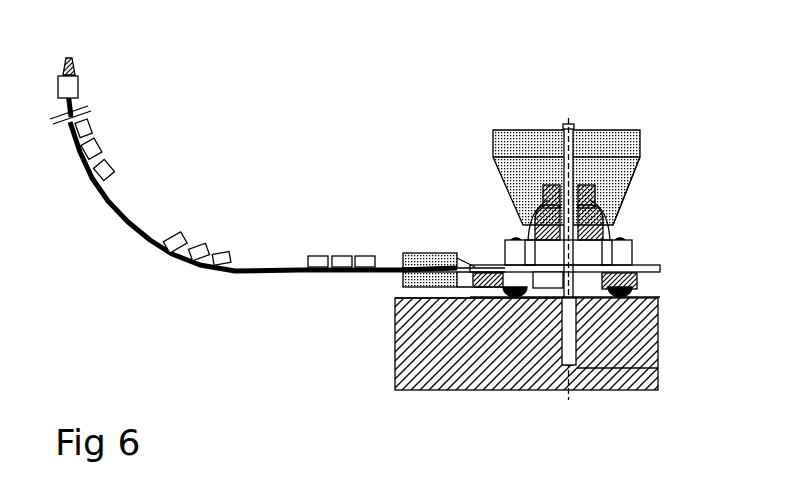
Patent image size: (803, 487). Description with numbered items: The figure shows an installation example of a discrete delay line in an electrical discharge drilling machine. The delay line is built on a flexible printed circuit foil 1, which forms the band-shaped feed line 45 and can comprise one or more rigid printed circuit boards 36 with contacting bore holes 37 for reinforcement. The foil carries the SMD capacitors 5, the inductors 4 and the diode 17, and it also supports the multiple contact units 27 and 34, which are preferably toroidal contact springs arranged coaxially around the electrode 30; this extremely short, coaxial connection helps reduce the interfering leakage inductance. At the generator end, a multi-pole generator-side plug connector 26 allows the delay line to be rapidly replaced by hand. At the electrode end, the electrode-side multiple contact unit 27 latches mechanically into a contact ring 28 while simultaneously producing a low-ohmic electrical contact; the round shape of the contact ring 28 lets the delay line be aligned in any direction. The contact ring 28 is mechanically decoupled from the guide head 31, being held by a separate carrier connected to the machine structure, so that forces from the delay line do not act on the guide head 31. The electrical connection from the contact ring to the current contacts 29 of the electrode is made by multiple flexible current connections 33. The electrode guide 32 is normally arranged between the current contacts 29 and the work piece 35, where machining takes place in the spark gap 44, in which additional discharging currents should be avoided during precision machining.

The flexible printed circuit foil 1 is at (302, 273).
The inductors 4 is at (120, 220).
The SMD capacitors 5 is at (111, 160).
The diode 17 is at (408, 252).
The multi-pole generator-side plug connector 26 is at (76, 73).
The electrode-side multiple contact unit 27 is at (504, 238).
The contact ring 28 is at (517, 240).
The current contacts 29 is at (546, 188).
The electrode 30 is at (566, 124).
The guide head 31 is at (597, 147).
The electrode guide 32 is at (645, 140).
The flexible current connections 33 is at (612, 216).
The multiple contact unit 34 is at (637, 290).
The work piece 35 is at (657, 320).
The rigid printed circuit boards 36 is at (402, 282).
The contacting bore holes 37 is at (393, 318).
The spark gap 44 is at (658, 368).
The band-shaped feed line 45 is at (97, 193).